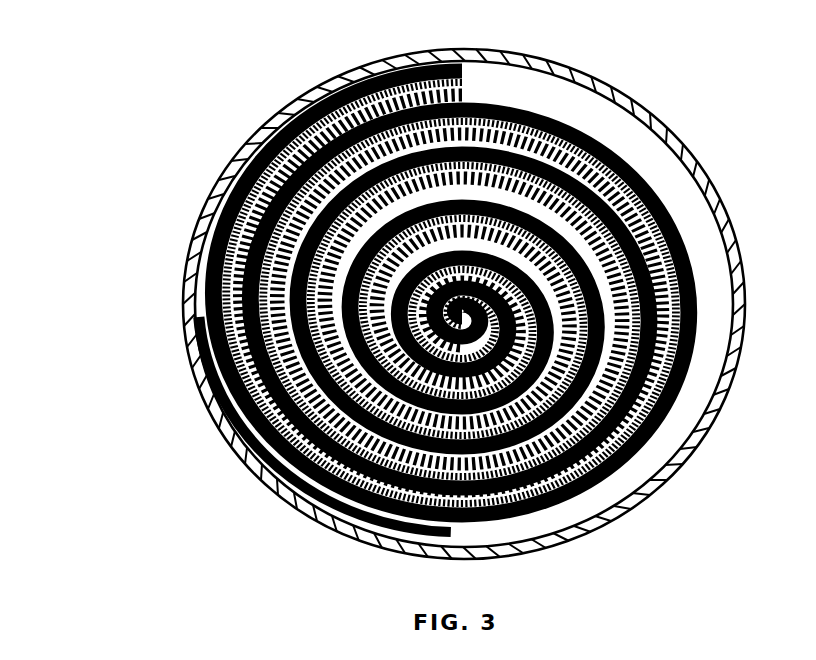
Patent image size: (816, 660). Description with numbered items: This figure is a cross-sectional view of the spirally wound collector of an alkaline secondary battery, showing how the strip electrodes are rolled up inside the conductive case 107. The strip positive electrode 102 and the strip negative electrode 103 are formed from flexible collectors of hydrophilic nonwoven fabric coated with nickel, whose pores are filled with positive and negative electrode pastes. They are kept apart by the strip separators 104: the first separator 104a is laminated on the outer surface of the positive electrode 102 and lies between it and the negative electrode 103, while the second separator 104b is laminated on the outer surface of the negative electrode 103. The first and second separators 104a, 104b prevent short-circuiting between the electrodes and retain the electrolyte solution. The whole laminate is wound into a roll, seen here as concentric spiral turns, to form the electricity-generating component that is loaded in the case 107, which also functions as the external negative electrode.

The positive electrode 102 is at (262, 476).
The negative electrode 103 is at (213, 202).
The separators 104 is at (78, 317).
The first separator 104a is at (200, 322).
The second separator 104b is at (205, 371).
The case 107 is at (614, 96).